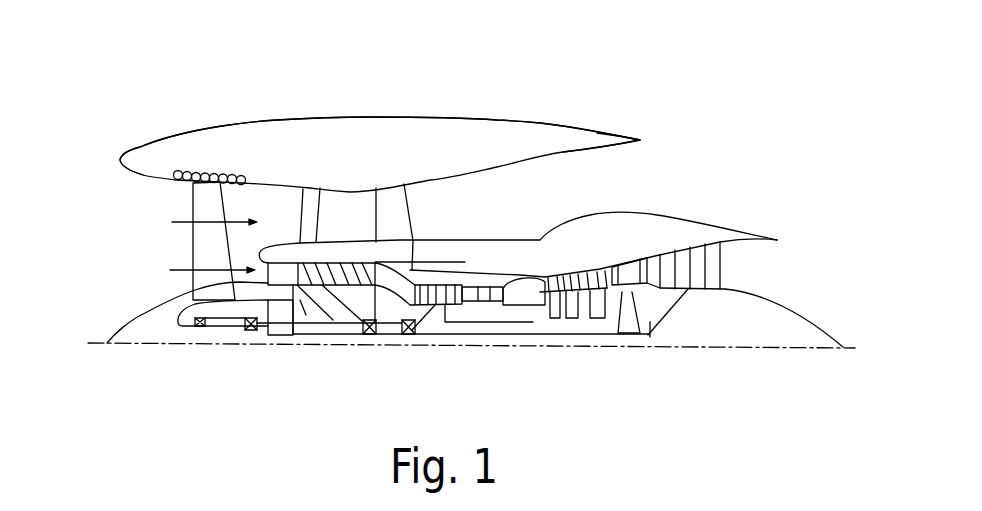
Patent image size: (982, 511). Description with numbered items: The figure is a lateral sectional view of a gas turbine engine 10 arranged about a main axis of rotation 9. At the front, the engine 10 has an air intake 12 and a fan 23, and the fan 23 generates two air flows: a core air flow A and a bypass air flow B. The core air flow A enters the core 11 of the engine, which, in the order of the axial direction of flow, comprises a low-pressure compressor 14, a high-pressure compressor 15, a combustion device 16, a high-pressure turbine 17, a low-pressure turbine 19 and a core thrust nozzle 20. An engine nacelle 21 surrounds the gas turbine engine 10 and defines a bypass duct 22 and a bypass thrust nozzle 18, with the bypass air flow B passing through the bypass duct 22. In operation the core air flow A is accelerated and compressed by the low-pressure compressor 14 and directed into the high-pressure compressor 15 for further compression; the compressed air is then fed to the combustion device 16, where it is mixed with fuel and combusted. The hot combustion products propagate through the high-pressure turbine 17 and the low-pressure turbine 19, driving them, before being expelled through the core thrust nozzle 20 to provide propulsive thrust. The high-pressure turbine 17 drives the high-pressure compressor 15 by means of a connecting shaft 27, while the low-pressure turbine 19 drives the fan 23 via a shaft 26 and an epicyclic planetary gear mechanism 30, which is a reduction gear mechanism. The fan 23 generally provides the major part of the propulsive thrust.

The main axis of rotation 9 is at (743, 350).
The gas turbine engine 10 is at (170, 133).
The core 11 is at (540, 255).
The air intake 12 is at (122, 195).
The low-pressure compressor 14 is at (343, 262).
The high-pressure compressor 15 is at (463, 271).
The combustion device 16 is at (527, 297).
The high-pressure turbine 17 is at (585, 266).
The bypass thrust nozzle 18 is at (738, 135).
The low-pressure turbine 19 is at (688, 289).
The core thrust nozzle 20 is at (786, 275).
The engine nacelle 21 is at (390, 133).
The bypass duct 22 is at (617, 178).
The fan 23 is at (200, 258).
The shaft 26 is at (430, 334).
The connecting shaft 27 is at (487, 334).
The epicyclic planetary gear mechanism 30 is at (281, 328).
The core air flow A is at (200, 269).
The bypass air flow B is at (201, 222).